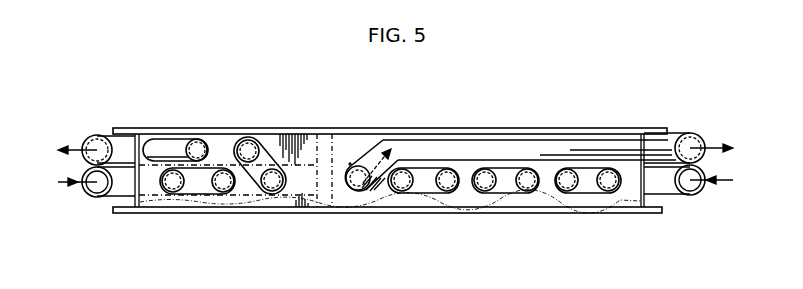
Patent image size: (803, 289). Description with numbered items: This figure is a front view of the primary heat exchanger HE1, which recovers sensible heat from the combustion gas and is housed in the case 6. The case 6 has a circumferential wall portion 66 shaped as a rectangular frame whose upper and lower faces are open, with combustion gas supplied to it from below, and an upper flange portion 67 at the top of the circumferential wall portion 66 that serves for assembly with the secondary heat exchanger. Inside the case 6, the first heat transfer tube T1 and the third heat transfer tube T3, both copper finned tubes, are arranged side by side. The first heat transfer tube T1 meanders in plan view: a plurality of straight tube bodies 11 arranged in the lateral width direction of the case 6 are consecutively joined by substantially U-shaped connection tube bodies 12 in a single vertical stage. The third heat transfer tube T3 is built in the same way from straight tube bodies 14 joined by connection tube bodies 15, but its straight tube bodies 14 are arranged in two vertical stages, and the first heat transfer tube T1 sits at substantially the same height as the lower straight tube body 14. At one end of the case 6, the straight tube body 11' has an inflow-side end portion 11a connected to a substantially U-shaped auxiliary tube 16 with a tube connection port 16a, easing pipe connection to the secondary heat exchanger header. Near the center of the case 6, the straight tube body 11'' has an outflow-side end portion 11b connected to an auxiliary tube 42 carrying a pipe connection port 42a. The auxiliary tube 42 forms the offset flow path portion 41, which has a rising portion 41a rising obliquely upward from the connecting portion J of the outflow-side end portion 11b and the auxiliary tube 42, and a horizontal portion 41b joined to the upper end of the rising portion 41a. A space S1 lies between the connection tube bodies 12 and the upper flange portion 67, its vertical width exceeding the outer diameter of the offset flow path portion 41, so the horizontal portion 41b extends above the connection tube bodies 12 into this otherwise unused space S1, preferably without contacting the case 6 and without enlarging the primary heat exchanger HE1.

The primary heat exchanger HE1 is at (166, 112).
The third heat transfer tube T3 is at (200, 137).
The straight tube bodies 14 is at (238, 141).
The connection tube bodies 15 is at (196, 187).
The case 6 is at (274, 140).
The circumferential wall portion 66 is at (302, 135).
The connecting portion J is at (350, 162).
The rising portion 41a is at (368, 153).
The upper flange portion 67 is at (428, 128).
The space S1 is at (470, 157).
The horizontal portion 41b is at (509, 136).
The offset flow path portion 41 is at (568, 135).
The auxiliary tube 42 is at (668, 131).
The pipe connection port 42a is at (691, 134).
The straight tube bodies 11 is at (505, 209).
The connection tube bodies 12 is at (420, 193).
The straight tube body 11'' is at (328, 221).
The outflow-side end portion 11b is at (361, 199).
The first heat transfer tube T1 is at (444, 198).
The straight tube body 11' is at (592, 221).
The inflow-side end portion 11a is at (611, 192).
The auxiliary tube 16 is at (664, 188).
The tube connection port 16a is at (692, 196).